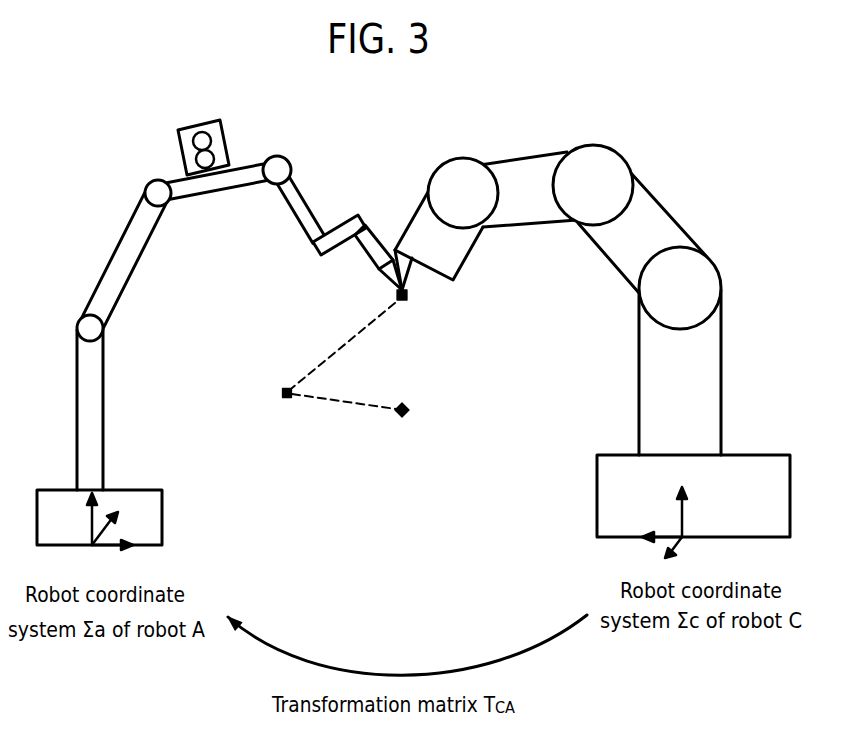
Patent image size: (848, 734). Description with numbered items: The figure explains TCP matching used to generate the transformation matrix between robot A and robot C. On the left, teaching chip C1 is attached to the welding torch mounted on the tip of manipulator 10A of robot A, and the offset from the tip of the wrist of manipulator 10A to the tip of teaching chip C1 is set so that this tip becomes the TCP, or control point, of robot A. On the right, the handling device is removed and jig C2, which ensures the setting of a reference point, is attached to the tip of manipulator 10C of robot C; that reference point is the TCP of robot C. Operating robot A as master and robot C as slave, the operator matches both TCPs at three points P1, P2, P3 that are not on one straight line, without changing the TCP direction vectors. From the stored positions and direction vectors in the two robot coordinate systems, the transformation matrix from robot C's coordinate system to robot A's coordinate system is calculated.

The manipulator 10A is at (93, 275).
The manipulator 10C is at (702, 235).
The teaching chip C1 is at (385, 283).
The jig C2 is at (420, 287).
The point P1 is at (403, 313).
The point P2 is at (273, 409).
The point P3 is at (405, 430).